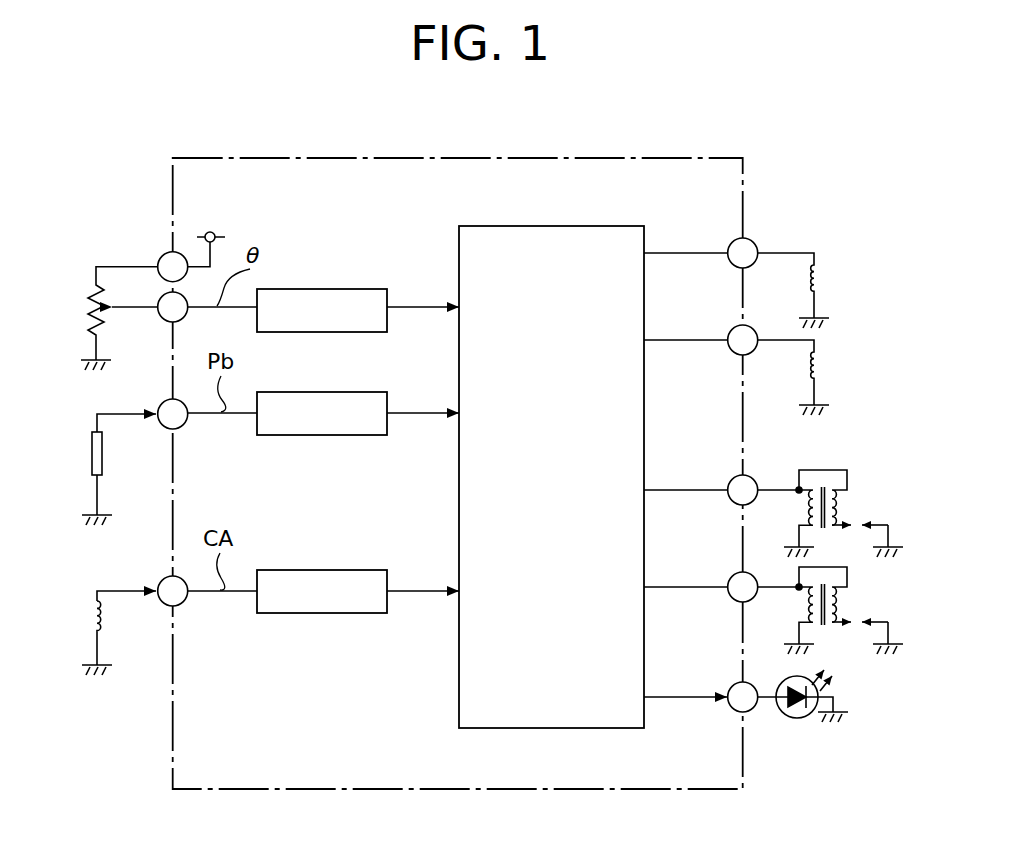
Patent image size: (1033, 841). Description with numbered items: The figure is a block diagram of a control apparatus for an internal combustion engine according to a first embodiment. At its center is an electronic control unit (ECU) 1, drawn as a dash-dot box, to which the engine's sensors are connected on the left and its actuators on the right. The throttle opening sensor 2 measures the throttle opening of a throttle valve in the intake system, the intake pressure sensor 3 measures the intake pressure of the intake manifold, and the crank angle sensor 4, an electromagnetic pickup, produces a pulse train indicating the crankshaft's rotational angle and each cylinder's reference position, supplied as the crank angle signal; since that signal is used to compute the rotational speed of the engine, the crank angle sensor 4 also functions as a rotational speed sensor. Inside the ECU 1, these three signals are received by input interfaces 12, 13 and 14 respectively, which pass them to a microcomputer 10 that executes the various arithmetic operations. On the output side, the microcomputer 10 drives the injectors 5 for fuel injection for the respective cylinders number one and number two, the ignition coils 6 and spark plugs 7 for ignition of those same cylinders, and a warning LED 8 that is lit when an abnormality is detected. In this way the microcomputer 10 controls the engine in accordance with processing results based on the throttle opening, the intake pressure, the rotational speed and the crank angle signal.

The electronic control unit (ECU) 1 is at (512, 158).
The throttle opening sensor 2 is at (90, 289).
The intake pressure sensor 3 is at (90, 455).
The crank angle sensor 4 is at (90, 618).
The injectors 5 is at (823, 276).
The ignition coils 6 is at (840, 498).
The spark plugs 7 is at (858, 522).
The warning LED 8 is at (797, 719).
The microcomputer 10 is at (552, 226).
The input interface 12 is at (322, 289).
The input interface 13 is at (322, 392).
The input interface 14 is at (322, 570).